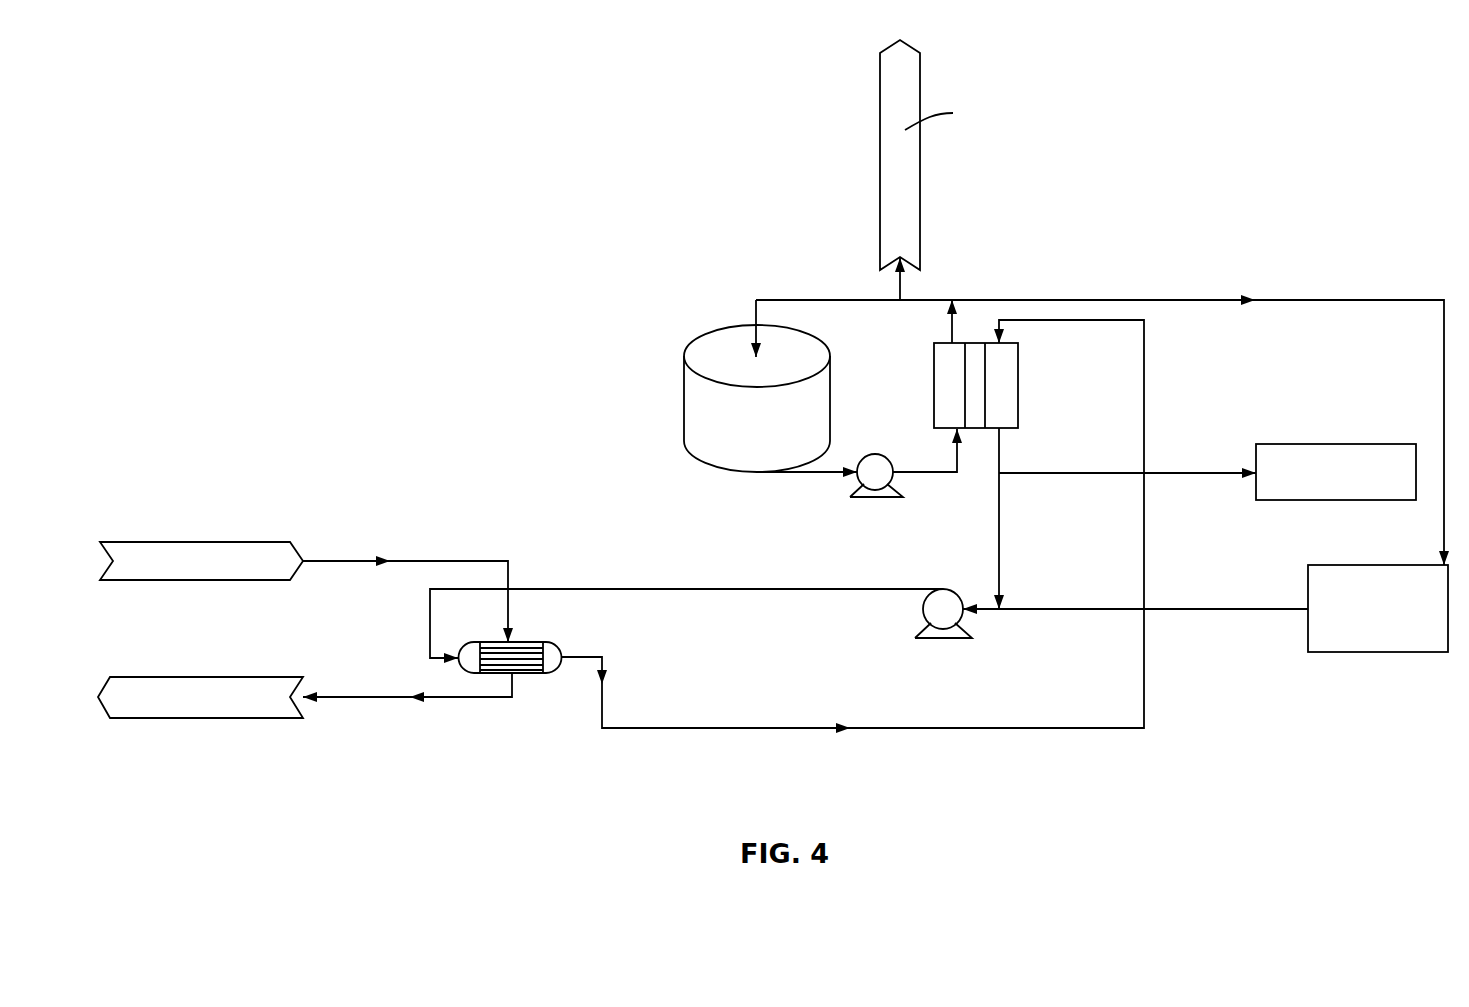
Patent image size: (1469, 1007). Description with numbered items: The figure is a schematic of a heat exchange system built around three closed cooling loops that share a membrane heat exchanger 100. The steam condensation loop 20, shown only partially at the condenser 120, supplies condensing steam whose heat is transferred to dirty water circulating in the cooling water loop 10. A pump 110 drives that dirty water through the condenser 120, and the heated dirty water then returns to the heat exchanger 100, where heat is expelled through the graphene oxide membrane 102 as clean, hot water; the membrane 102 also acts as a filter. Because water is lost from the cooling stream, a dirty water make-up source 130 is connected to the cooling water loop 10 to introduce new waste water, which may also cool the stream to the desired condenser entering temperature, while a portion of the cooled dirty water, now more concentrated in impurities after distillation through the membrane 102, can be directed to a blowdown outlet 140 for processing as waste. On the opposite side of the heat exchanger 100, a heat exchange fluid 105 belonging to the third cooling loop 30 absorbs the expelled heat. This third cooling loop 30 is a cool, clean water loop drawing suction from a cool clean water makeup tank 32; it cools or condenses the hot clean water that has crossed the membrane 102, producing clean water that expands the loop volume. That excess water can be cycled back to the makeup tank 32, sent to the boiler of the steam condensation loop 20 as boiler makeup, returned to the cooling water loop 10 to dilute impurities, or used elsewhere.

The cooling water loop 10 is at (1188, 678).
The steam condensation loop 20 is at (357, 527).
The third cooling loop 30 is at (838, 248).
The cool clean water makeup tank 32 is at (712, 332).
The heat exchanger 100 is at (933, 393).
The graphene oxide membrane 102 is at (975, 430).
The heat exchange fluid 105 is at (937, 474).
The pump 110 is at (942, 588).
The condenser 120 is at (530, 642).
The dirty water make-up source 130 is at (1380, 563).
The blowdown outlet 140 is at (1327, 443).